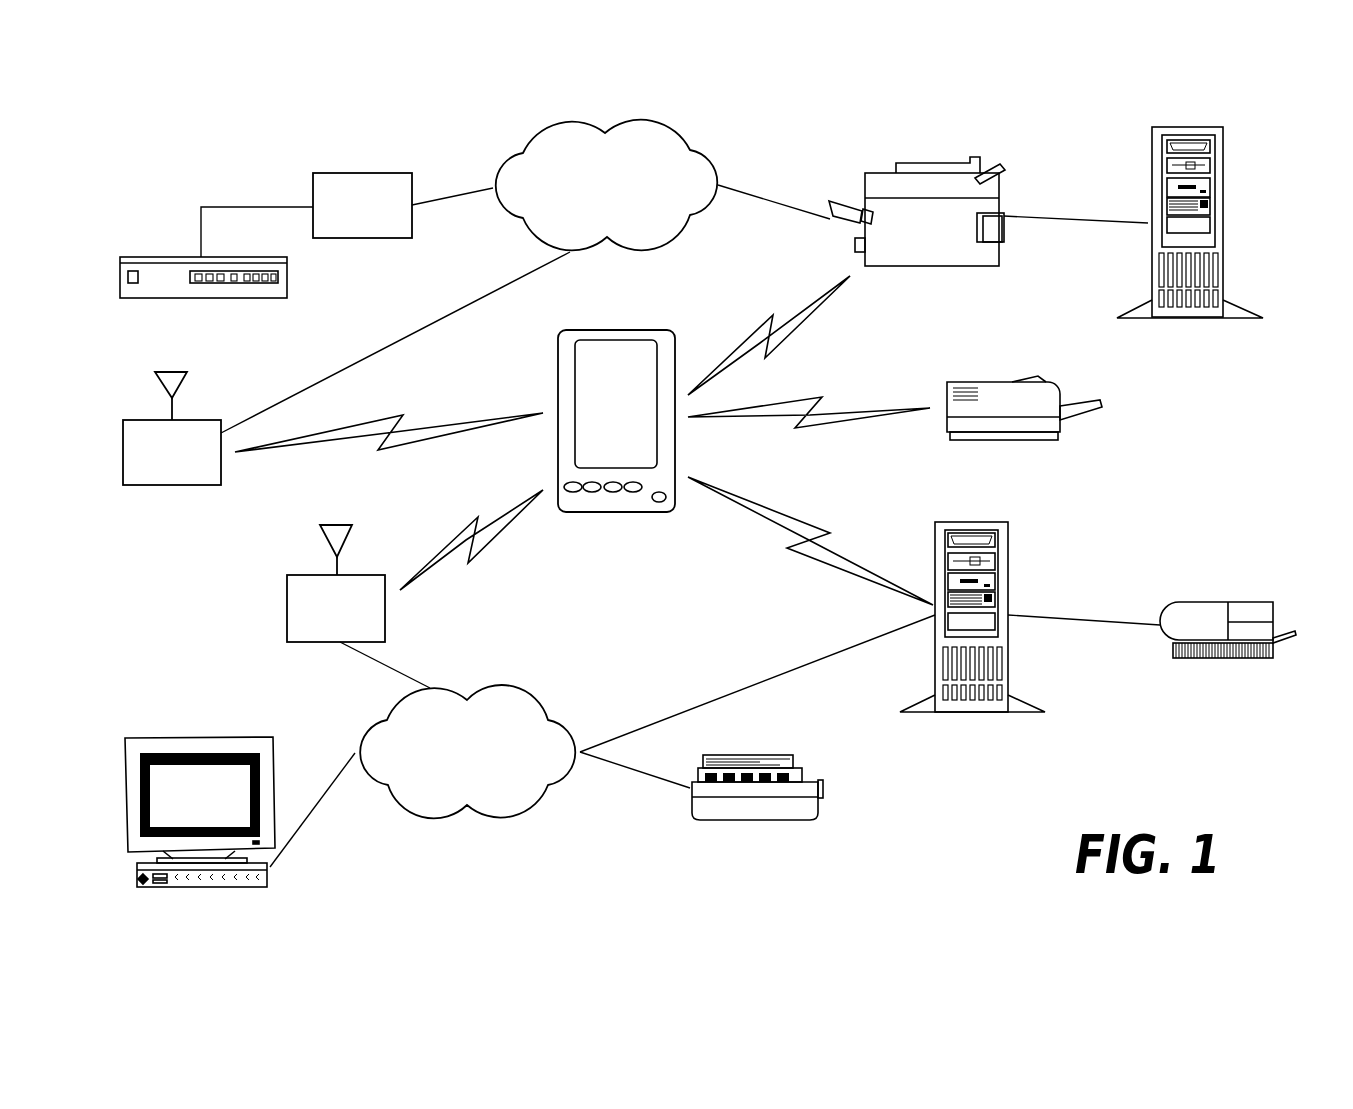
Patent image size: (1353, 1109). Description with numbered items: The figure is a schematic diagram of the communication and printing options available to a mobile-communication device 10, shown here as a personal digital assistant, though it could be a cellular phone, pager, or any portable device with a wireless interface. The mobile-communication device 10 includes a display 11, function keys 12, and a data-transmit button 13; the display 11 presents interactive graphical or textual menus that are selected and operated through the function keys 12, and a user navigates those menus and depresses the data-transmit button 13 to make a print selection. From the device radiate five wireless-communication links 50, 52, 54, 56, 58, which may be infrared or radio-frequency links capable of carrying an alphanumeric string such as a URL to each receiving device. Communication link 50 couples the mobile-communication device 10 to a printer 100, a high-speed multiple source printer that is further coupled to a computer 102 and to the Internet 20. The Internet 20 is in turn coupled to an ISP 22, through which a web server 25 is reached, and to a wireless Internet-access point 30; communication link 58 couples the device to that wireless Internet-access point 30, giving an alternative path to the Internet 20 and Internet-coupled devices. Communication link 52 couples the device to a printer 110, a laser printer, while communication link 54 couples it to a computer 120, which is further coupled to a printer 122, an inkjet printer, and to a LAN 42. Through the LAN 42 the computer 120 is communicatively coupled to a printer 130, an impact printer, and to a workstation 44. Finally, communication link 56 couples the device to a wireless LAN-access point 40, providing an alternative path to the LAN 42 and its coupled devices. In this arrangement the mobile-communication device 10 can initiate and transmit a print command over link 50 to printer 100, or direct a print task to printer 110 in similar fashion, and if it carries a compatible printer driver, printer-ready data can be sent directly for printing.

The mobile-communication device 10 is at (632, 330).
The display 11 is at (648, 370).
The function keys 12 is at (591, 500).
The data-transmit button 13 is at (660, 508).
The Internet 20 is at (695, 150).
The ISP 22 is at (357, 172).
The web server 25 is at (287, 278).
The wireless Internet-access point 30 is at (182, 415).
The wireless LAN-access point 40 is at (345, 572).
The LAN 42 is at (497, 688).
The workstation 44 is at (193, 737).
The wireless-communication link 50 is at (813, 318).
The wireless-communication link 52 is at (817, 432).
The wireless-communication link 54 is at (795, 510).
The wireless-communication link 56 is at (433, 568).
The wireless-communication link 58 is at (415, 442).
The printer 100 is at (932, 158).
The computer 102 is at (1187, 125).
The printer 110 is at (1007, 378).
The computer 120 is at (970, 520).
The printer 122 is at (1217, 598).
The printer 130 is at (757, 752).